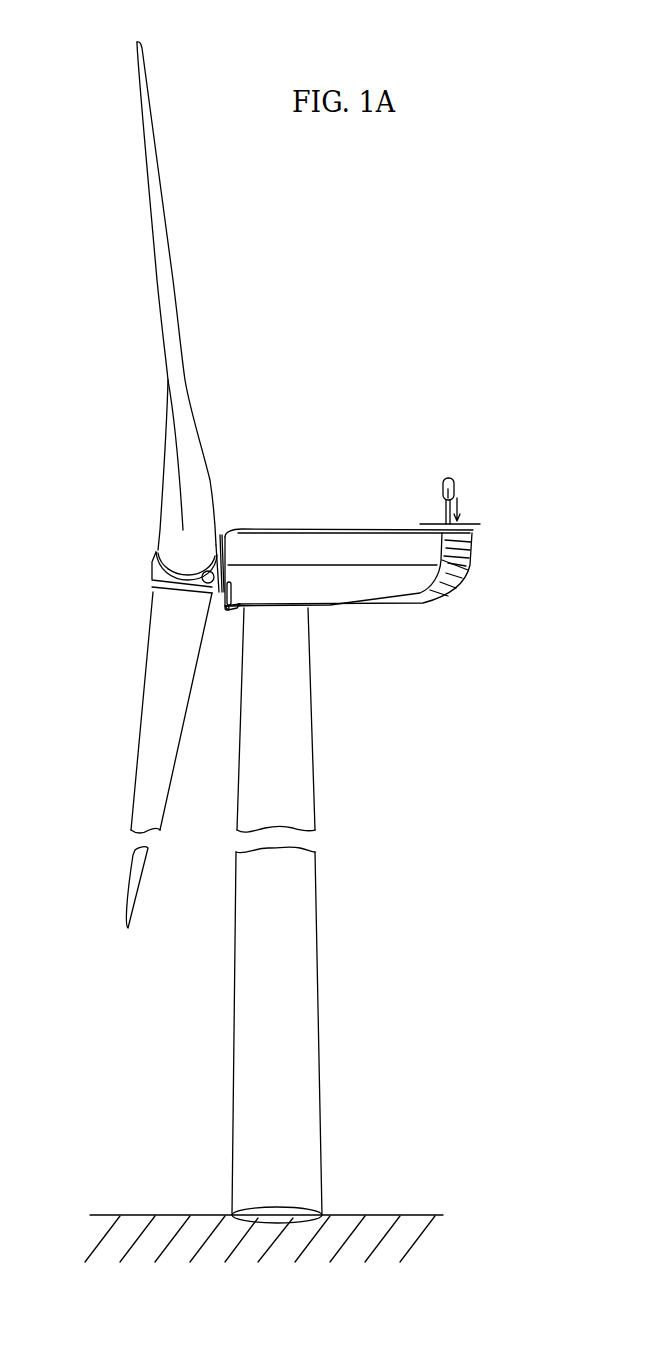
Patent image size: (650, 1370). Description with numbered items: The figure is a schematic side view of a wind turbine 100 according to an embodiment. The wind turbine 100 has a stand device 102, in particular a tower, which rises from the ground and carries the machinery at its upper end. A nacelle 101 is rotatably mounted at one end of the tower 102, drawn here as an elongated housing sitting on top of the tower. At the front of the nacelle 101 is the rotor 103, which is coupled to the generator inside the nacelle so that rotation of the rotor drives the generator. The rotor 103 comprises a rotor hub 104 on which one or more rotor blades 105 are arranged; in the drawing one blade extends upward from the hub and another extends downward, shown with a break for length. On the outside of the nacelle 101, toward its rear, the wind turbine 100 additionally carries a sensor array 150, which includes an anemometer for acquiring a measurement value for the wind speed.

The wind turbine 100 is at (287, 392).
The nacelle 101 is at (357, 553).
The stand device 102 is at (297, 892).
The rotor 103 is at (135, 543).
The rotor hub 104 is at (150, 577).
The rotor blade 105 is at (155, 740).
The sensor array 150 is at (458, 478).